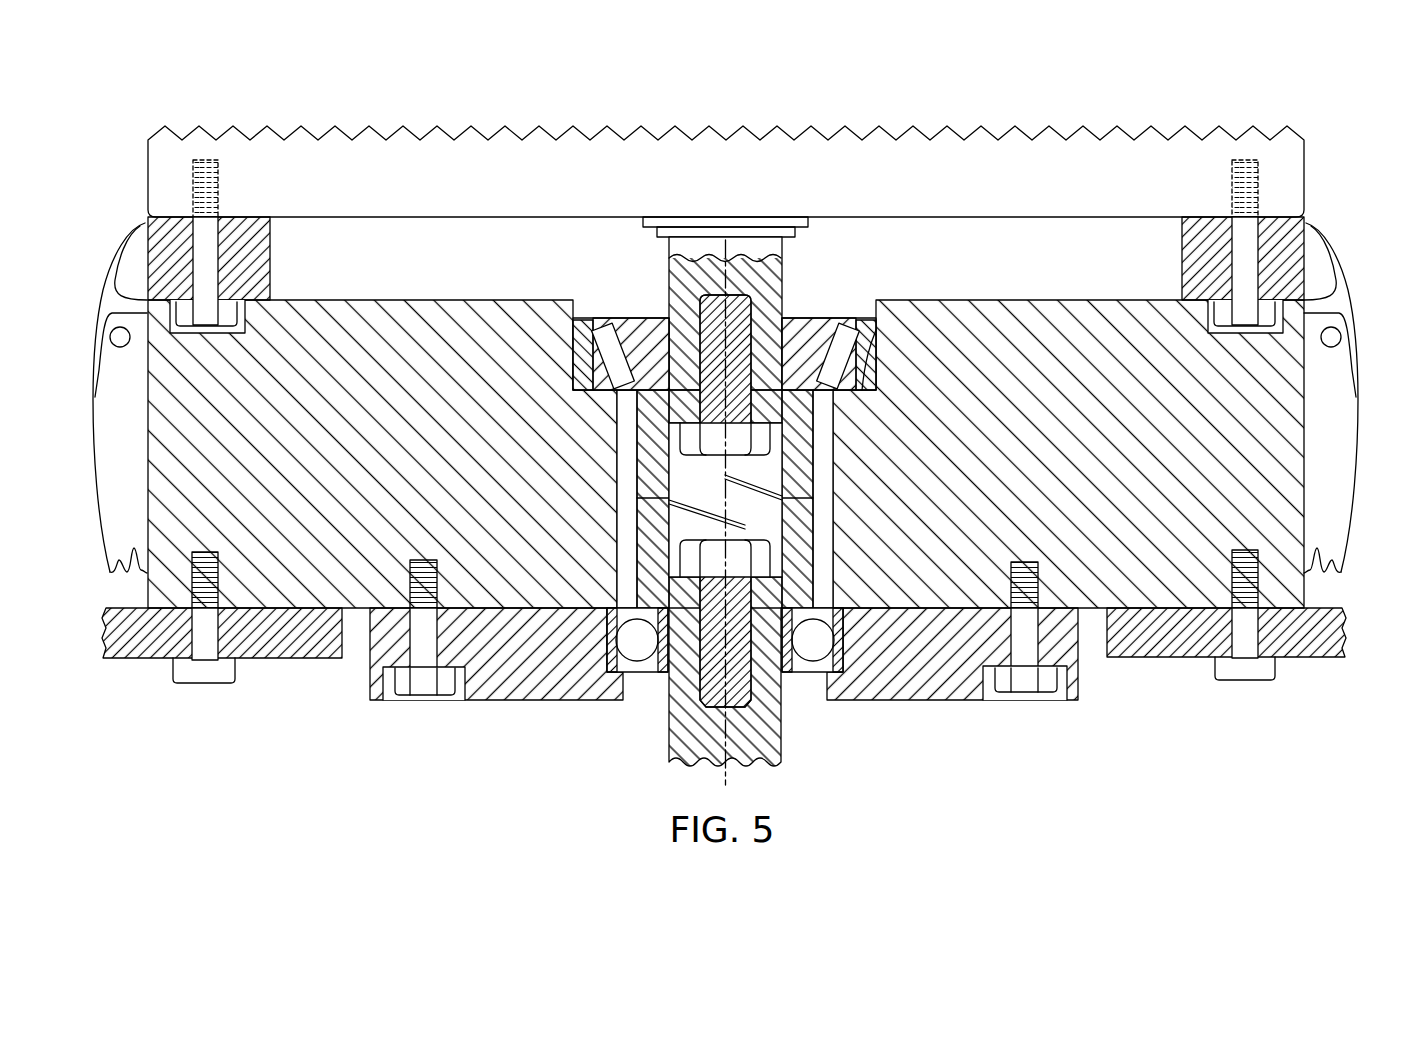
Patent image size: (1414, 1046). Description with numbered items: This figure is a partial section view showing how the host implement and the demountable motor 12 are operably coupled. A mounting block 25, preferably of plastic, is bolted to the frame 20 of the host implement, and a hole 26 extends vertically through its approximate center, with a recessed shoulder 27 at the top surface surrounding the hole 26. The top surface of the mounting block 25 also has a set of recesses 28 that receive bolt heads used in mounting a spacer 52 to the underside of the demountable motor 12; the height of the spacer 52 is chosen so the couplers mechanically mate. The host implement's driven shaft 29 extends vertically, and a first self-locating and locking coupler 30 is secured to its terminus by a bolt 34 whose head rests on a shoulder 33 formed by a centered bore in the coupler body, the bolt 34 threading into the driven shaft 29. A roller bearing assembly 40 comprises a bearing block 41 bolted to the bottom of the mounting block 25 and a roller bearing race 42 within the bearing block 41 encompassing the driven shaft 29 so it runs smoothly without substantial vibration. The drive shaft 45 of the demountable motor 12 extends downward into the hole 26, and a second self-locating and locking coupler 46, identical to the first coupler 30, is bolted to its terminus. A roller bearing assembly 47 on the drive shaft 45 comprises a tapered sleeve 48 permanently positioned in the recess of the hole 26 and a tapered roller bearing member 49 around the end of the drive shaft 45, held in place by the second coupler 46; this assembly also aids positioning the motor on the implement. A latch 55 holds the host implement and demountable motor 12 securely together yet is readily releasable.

The demountable motor 12 is at (948, 145).
The frame 20 is at (296, 658).
The mounting block 25 is at (386, 322).
The hole 26 is at (835, 490).
The recessed shoulder 27 is at (868, 372).
The recesses 28 is at (243, 330).
The driven shaft 29 is at (782, 738).
The first self-locating and locking coupler 30 is at (656, 572).
The shoulder 33 is at (676, 555).
The bolt 34 is at (758, 555).
The roller bearing assembly 40 is at (462, 702).
The bearing block 41 is at (946, 700).
The roller bearing race 42 is at (810, 672).
The drive shaft 45 is at (787, 277).
The second self-locating and locking coupler 46 is at (775, 465).
The roller bearing assembly 47 is at (719, 311).
The tapered sleeve 48 is at (870, 318).
The tapered roller bearing member 49 is at (652, 317).
The spacer 52 is at (247, 228).
The latch 55 is at (118, 388).